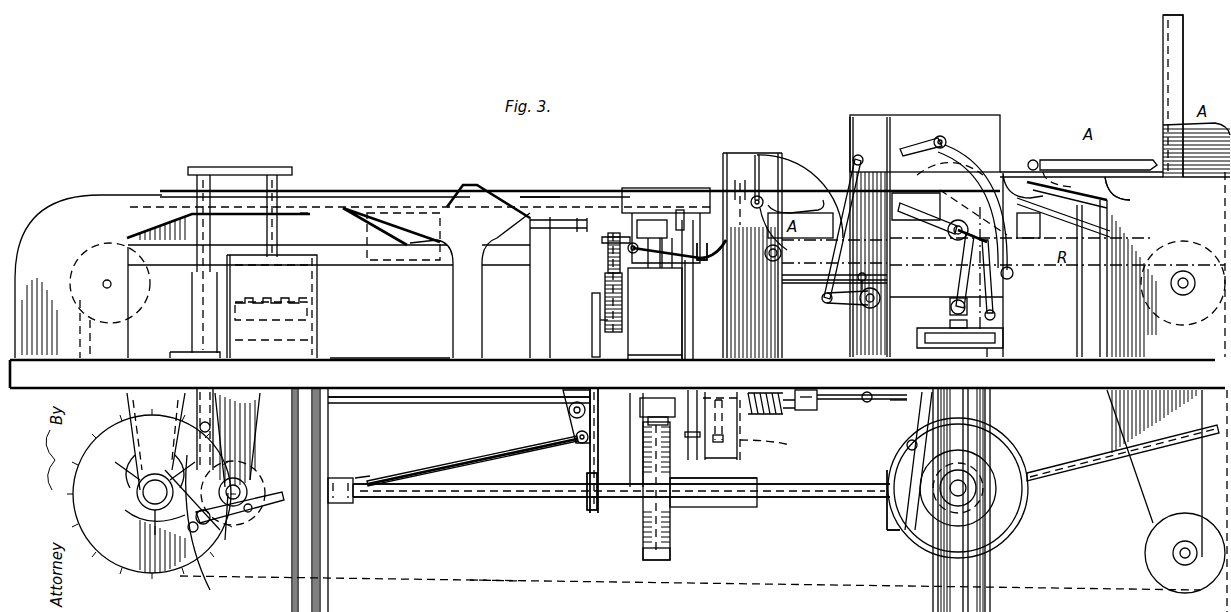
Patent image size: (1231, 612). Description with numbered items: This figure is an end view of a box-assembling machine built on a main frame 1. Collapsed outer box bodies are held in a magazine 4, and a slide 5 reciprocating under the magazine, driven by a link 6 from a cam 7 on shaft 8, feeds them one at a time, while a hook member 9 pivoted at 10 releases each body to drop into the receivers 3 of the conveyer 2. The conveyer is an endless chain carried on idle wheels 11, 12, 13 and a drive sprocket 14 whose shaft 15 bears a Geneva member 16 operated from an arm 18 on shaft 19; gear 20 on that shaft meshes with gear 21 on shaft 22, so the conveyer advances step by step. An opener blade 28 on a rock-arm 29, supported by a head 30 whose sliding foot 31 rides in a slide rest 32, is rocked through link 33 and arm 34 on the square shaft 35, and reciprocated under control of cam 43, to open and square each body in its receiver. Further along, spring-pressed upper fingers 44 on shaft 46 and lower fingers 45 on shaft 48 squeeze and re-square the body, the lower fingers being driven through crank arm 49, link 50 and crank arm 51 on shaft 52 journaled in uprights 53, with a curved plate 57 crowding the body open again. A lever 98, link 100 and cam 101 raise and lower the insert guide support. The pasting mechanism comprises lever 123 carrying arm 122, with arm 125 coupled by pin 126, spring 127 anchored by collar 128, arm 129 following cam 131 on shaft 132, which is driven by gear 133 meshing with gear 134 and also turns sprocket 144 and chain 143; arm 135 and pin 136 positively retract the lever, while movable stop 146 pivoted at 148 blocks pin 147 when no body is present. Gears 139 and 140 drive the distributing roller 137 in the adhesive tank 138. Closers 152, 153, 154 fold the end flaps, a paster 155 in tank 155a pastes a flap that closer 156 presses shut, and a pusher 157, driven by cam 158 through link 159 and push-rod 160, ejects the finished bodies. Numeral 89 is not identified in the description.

The main frame 1 is at (377, 370).
The conveyer 2 is at (495, 570).
The receivers 3 is at (320, 222).
The magazine 4 is at (1180, 84).
The slide 5 is at (1136, 195).
The link 6 is at (1095, 470).
The cam 7 is at (1007, 503).
The shaft 8 is at (970, 497).
The hook member 9 is at (1087, 170).
The pivot 10 is at (1035, 160).
The idle wheel 11 is at (143, 296).
The idle wheel 12 is at (1183, 296).
The idle wheel 13 is at (1147, 552).
The drive sprocket 14 is at (115, 550).
The shaft 15 is at (157, 500).
The Geneva member 16 is at (123, 492).
The arm 18 is at (232, 540).
The shaft 19 is at (255, 455).
The gear 20 is at (236, 529).
The gear 21 is at (328, 470).
The shaft 22 is at (312, 495).
The opener blade 28 is at (935, 205).
The rock-arm 29 is at (985, 215).
The head 30 is at (950, 312).
The sliding foot 31 is at (940, 345).
The slide rest 32 is at (985, 350).
The link 33 is at (667, 237).
The arm 34 is at (978, 333).
The square shaft 35 is at (998, 312).
The cam 43 is at (793, 210).
The upper fingers 44 is at (773, 187).
The lower fingers 45 is at (773, 205).
The shaft 46 is at (742, 194).
The shaft 48 is at (768, 256).
The crank arm 49 is at (693, 310).
The link 50 is at (834, 238).
The crank arm 51 is at (946, 286).
The shaft 52 is at (865, 307).
The uprights 53 is at (931, 197).
The curved plate 57 is at (800, 167).
The block 89 is at (650, 220).
The lever 98 is at (610, 413).
The link 100 is at (495, 452).
The cam 101 is at (363, 472).
The arm 122 is at (680, 210).
The lever 123 is at (687, 317).
The arm 125 is at (740, 445).
The pin 126 is at (690, 467).
The spring 127 is at (765, 410).
The collar 128 is at (805, 410).
The arm 129 is at (633, 480).
The cam 131 is at (645, 558).
The shaft 132 is at (520, 493).
The gear 133 is at (897, 527).
The gear 134 is at (957, 520).
The arm 135 is at (810, 430).
The pin 136 is at (680, 440).
The distributing roller 137 is at (655, 314).
The tank 138 is at (655, 345).
The gear 139 is at (607, 268).
The gear 140 is at (600, 338).
The chain 143 is at (593, 312).
The sprocket 144 is at (585, 510).
The movable stop 146 is at (703, 237).
The pin 147 is at (768, 250).
The pivot 148 is at (630, 246).
The movable closer 152 is at (580, 220).
The stationary closer 153 is at (525, 195).
The flap closer 154 is at (370, 210).
The paster 155 is at (322, 293).
The tank of adhesive 155a is at (320, 333).
The closer 156 is at (158, 215).
The pusher 157 is at (126, 329).
The cam 158 is at (1022, 442).
The link 159 is at (888, 400).
The push-rod 160 is at (417, 403).